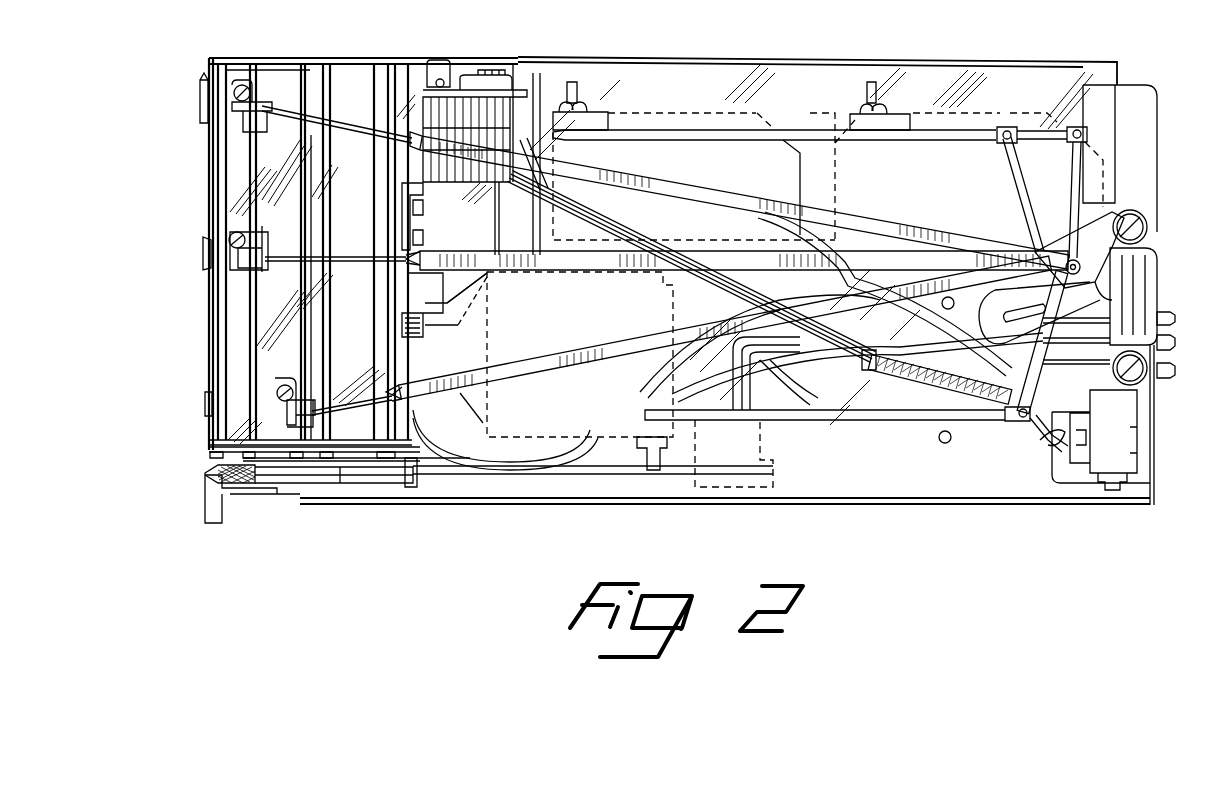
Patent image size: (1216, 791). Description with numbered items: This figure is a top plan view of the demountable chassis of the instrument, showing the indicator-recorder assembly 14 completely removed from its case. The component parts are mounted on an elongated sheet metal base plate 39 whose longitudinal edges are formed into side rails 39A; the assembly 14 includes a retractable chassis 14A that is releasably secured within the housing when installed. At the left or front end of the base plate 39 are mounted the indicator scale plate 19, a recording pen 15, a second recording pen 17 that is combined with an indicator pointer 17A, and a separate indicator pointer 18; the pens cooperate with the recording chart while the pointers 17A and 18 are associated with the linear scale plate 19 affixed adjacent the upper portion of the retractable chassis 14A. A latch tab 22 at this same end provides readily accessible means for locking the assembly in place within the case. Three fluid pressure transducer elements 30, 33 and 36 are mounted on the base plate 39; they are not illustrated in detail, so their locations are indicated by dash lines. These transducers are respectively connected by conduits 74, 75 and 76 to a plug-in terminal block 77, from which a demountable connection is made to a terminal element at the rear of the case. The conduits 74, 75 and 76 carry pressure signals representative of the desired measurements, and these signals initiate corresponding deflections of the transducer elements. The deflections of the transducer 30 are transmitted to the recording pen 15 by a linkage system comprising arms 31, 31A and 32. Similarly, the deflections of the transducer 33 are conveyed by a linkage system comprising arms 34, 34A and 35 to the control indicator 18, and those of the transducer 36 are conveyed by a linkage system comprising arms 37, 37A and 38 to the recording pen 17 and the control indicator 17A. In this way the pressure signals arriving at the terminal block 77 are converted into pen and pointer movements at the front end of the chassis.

The indicator-recorder assembly 14 is at (683, 514).
The retractable chassis 14A is at (323, 50).
The recording pen 15 is at (213, 408).
The second recording pen 17 is at (200, 110).
The indicator pointer 17A is at (212, 96).
The indicator pointer 18 is at (200, 255).
The linear scale plate 19 is at (208, 163).
The latch tab 22 is at (207, 505).
The fluid pressure transducer element 30 is at (672, 166).
The arm 31 is at (780, 137).
The arm 31A is at (1010, 186).
The arm 32 is at (615, 350).
The fluid pressure transducer element 33 is at (910, 184).
The arm 34 is at (1040, 126).
The arm 34A is at (1070, 180).
The arm 35 is at (692, 258).
The fluid pressure transducer element 36 is at (568, 309).
The arm 37 is at (912, 412).
The arm 37A is at (1032, 396).
The arm 38 is at (722, 193).
The base plate 39 is at (822, 485).
The side rails 39A is at (968, 60).
The conduit 74 is at (868, 325).
The conduit 75 is at (985, 314).
The conduit 76 is at (935, 345).
The plug-in terminal block 77 is at (1165, 357).